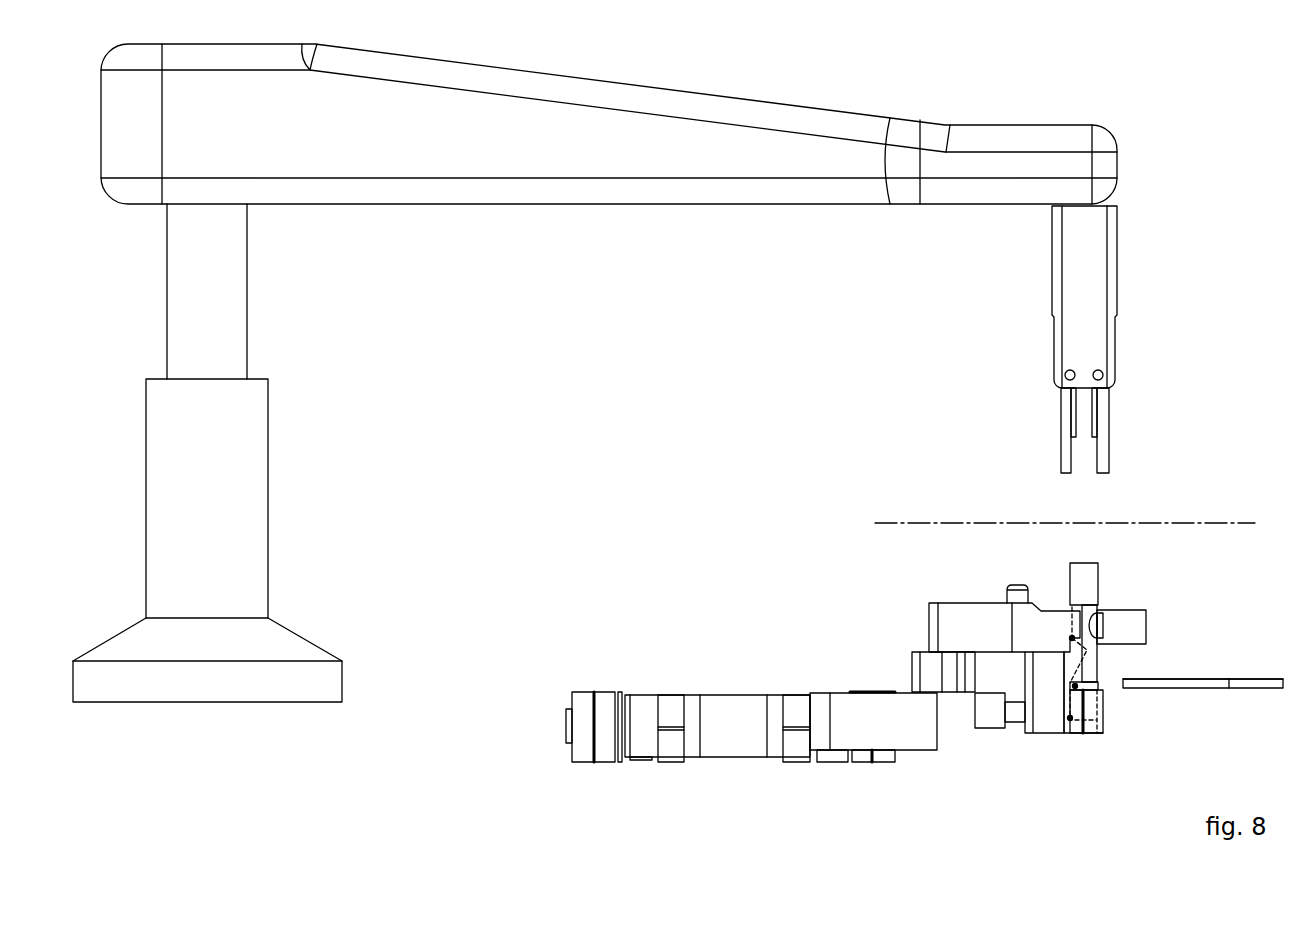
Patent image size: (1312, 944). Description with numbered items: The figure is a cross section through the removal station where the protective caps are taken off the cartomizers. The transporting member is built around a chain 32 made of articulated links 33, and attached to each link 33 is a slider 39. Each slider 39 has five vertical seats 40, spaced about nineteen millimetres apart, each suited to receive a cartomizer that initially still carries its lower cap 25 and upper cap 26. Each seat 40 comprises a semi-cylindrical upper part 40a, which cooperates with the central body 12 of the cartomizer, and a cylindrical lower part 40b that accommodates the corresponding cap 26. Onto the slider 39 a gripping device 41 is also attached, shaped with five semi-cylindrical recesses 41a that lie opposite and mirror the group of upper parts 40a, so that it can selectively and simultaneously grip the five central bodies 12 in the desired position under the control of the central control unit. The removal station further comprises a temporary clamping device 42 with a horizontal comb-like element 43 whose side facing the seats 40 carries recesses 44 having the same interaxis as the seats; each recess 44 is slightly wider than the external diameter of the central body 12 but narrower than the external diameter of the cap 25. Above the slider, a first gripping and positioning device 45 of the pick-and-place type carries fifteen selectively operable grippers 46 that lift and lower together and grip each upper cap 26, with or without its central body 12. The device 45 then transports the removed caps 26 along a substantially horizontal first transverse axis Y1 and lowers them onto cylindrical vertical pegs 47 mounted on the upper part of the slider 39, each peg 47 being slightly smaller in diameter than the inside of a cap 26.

The first gripping and positioning device 45 is at (926, 116).
The grippers 46 is at (1099, 423).
The first transverse axis Y1 is at (927, 523).
The chain 32 is at (933, 664).
The articulated links 33 is at (741, 723).
The slider 39 is at (967, 620).
The vertical pegs 47 is at (1018, 592).
The upper cap 26 is at (1090, 573).
The central body 12 is at (1092, 665).
The vertical seats 40 is at (1068, 603).
The semi-cylindrical upper part 40a is at (1065, 688).
The cylindrical lower part 40b is at (1082, 735).
The lower cap 25 is at (1075, 686).
The gripping device 41 is at (1124, 625).
The semi-cylindrical recesses 41a is at (1097, 636).
The temporary clamping device 42 is at (1278, 675).
The horizontal comb-like element 43 is at (1249, 683).
The recesses 44 is at (1150, 683).